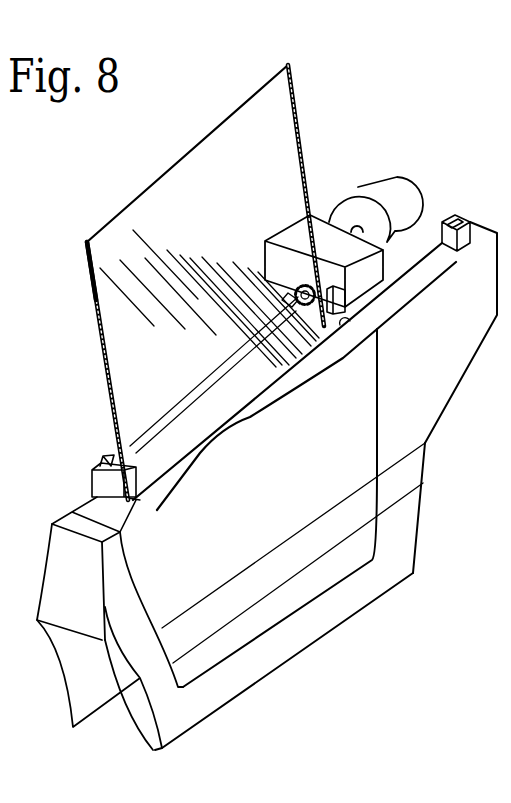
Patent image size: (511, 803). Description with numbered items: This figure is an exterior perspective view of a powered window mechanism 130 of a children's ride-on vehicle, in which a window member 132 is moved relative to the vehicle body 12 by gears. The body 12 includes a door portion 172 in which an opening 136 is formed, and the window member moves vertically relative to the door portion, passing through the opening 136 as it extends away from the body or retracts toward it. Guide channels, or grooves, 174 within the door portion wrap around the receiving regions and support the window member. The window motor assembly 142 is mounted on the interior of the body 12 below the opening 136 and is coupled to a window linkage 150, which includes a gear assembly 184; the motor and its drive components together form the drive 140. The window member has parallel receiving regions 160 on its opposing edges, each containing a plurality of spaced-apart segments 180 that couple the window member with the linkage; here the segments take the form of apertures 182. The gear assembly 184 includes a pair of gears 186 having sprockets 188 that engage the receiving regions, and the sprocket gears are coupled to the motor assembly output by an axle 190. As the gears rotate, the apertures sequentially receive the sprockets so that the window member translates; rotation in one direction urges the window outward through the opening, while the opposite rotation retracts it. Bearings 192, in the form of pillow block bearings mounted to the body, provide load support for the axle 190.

The body 12 is at (267, 482).
The powered window mechanism 130 is at (244, 274).
The window glass panel 132 is at (195, 281).
The opening 136 is at (348, 322).
The motor drive assembly 140 is at (366, 202).
The window motor assembly 142 is at (393, 178).
The window linkage 150 is at (323, 190).
The receiving regions 160 is at (90, 285).
The door portion 172 is at (425, 484).
The guide channels 174 is at (137, 499).
The spaced-apart segments 180 is at (82, 371).
The apertures 182 is at (108, 412).
The gear assembly 184 is at (312, 326).
The gears 186 is at (292, 290).
The sprockets 188 is at (107, 455).
The axle 190 is at (190, 398).
The bearings 192 is at (97, 483).